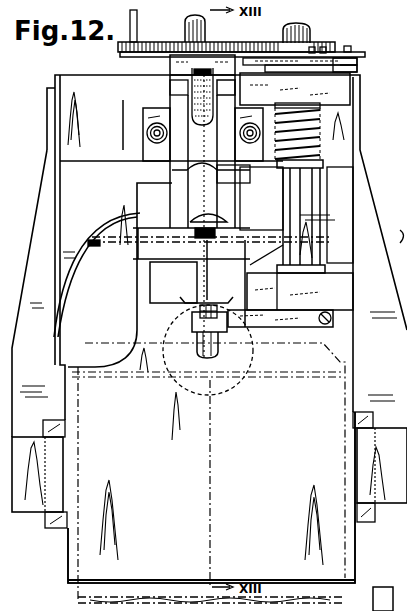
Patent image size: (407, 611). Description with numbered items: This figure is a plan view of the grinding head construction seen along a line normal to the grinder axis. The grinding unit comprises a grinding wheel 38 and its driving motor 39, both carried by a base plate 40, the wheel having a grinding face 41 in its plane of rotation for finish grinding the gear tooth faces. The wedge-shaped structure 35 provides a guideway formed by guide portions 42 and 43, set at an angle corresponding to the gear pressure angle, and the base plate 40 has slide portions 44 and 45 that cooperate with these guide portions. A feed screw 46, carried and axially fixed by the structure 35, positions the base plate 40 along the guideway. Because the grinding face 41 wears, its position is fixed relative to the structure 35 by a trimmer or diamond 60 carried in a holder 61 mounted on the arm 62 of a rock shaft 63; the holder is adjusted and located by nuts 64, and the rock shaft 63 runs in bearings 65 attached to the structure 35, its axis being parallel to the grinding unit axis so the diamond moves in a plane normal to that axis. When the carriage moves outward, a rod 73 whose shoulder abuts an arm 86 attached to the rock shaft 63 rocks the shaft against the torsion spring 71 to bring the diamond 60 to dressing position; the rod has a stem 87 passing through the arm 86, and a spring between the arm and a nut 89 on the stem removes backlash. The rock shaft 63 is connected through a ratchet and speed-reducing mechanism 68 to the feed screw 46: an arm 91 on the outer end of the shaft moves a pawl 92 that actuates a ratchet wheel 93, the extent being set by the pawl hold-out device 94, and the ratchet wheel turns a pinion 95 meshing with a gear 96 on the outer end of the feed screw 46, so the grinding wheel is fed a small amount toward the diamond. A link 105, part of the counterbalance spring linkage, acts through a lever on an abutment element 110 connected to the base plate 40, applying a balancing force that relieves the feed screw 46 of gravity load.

The wedge-shaped structure 35 is at (121, 211).
The grinding wheel 38 is at (137, 245).
The driving motor 39 is at (348, 548).
The base plate 40 is at (150, 333).
The grinding face 41 is at (95, 243).
The guide portion 42 is at (45, 478).
The guide portion 43 is at (158, 152).
The slide portion 44 is at (58, 520).
The slide portion 45 is at (173, 100).
The feed screw 46 is at (186, 74).
The trimmer or diamond 60 is at (210, 247).
The holder 61 is at (198, 240).
The arm 62 is at (203, 188).
The rock shaft 63 is at (307, 213).
The nuts 64 is at (198, 172).
The bearings 65 is at (340, 93).
The ratchet and speed-reducing mechanism 68 is at (277, 38).
The torsion spring 71 is at (320, 133).
The rod 73 is at (197, 353).
The arm 86 is at (282, 327).
The stem 87 is at (220, 312).
The nut 89 is at (183, 302).
The arm 91 is at (335, 72).
The pawl 92 is at (348, 48).
The ratchet wheel 93 is at (324, 50).
The pawl hold-out device 94 is at (328, 76).
The pinion 95 is at (312, 48).
The gear 96 is at (155, 42).
The link 105 is at (396, 213).
The abutment element 110 is at (233, 386).